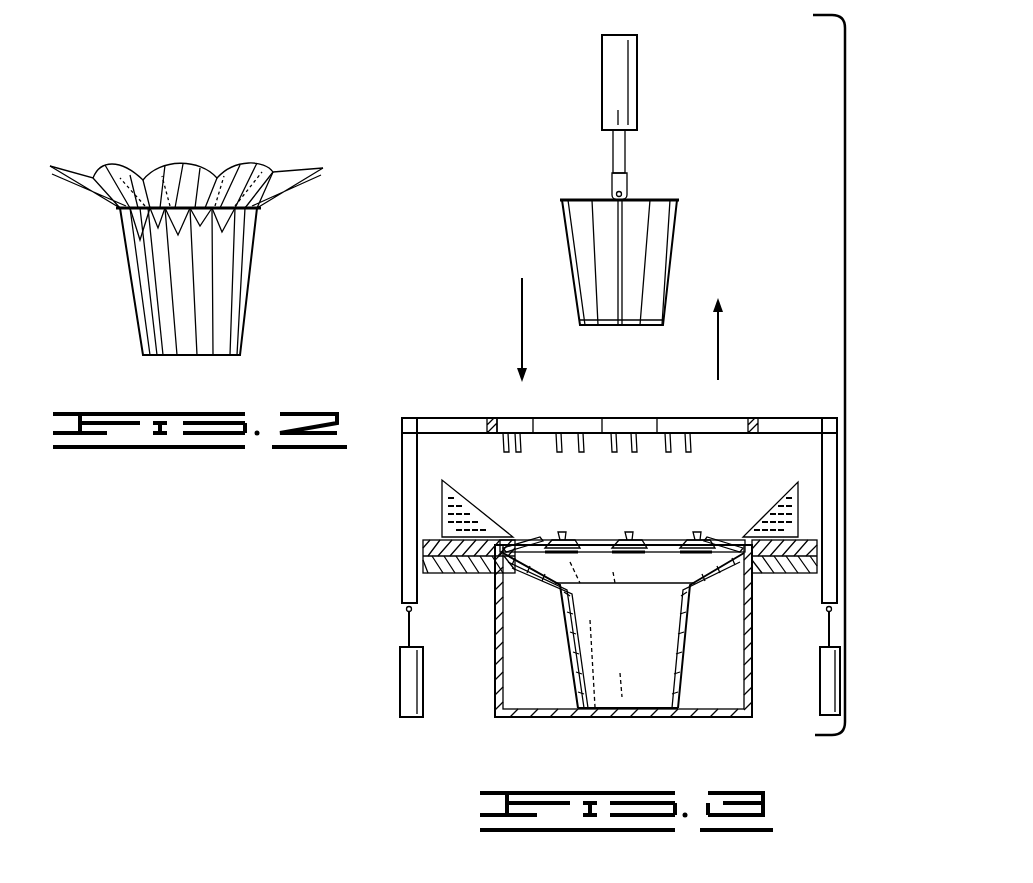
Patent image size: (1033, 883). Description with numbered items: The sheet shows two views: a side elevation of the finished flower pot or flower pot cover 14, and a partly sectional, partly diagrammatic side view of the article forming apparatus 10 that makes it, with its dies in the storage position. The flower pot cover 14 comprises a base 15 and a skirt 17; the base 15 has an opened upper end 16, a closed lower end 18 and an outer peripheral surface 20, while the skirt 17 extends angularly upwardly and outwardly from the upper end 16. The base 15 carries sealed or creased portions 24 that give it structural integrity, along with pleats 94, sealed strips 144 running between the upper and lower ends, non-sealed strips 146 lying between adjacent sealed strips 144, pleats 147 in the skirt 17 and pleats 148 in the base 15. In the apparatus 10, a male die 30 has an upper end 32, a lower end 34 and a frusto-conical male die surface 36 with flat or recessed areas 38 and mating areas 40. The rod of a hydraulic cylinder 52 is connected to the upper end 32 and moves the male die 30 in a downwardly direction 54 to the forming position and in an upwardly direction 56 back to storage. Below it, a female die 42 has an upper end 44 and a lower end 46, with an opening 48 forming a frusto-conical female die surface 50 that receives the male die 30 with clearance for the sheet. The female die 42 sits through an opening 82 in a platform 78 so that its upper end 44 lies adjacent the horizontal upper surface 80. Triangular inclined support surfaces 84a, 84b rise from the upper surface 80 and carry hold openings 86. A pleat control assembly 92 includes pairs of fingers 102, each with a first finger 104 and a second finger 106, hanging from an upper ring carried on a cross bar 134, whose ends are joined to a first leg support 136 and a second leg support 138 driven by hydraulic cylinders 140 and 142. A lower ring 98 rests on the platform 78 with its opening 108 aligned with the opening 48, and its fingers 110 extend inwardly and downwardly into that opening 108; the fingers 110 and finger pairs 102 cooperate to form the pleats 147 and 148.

In FIG. 3, the article forming apparatus 10 is at (497, 296).
In FIG. 2, the flower pot or flower pot cover 14 is at (284, 203).
In FIG. 2, the base 15 is at (245, 312).
In FIG. 2, the upper end 16 is at (120, 208).
In FIG. 2, the skirt 17 is at (273, 172).
In FIG. 2, the lower end 18 is at (225, 357).
In FIG. 2, the outer peripheral surface 20 is at (138, 294).
In FIG. 2, the sealed or creased portions 24 is at (225, 245).
In FIG. 3, the male die 30 is at (677, 238).
In FIG. 3, the upper end of male die 32 is at (655, 200).
In FIG. 3, the lower end of male die 34 is at (632, 326).
In FIG. 3, the male die surface 36 is at (676, 262).
In FIG. 3, the flat or recessed area 38 is at (580, 225).
In FIG. 3, the mating areas 40 is at (592, 247).
In FIG. 3, the female die 42 is at (688, 628).
In FIG. 3, the upper end of female die 44 is at (740, 562).
In FIG. 3, the lower end of female die 46 is at (628, 715).
In FIG. 3, the opening 48 is at (638, 540).
In FIG. 3, the female die surface 50 is at (572, 625).
In FIG. 3, the hydraulic cylinder 52 is at (623, 72).
In FIG. 3, the downwardly direction 54 is at (522, 330).
In FIG. 3, the upwardly direction 56 is at (718, 340).
In FIG. 3, the platform 78 is at (762, 480).
In FIG. 3, the upper surface 80 is at (428, 547).
In FIG. 3, the opening 82 is at (505, 565).
In FIG. 3, the inclined support surface 84a is at (442, 487).
In FIG. 3, the inclined support surface 84b is at (760, 515).
In FIG. 3, the hold openings 86 is at (457, 512).
In FIG. 3, the pleat control assembly 92 is at (470, 417).
In FIG. 2, the pleats 94 is at (243, 160).
In FIG. 3, the lower ring 98 is at (712, 418).
In FIG. 3, the pairs of fingers 102 is at (573, 448).
In FIG. 3, the first finger 104 is at (597, 420).
In FIG. 3, the second finger 106 is at (645, 440).
In FIG. 3, the opening 108 is at (585, 546).
In FIG. 3, the fingers 110 is at (632, 603).
In FIG. 3, the cross bar 134 is at (428, 418).
In FIG. 3, the first leg support 136 is at (402, 460).
In FIG. 3, the second leg support 138 is at (832, 493).
In FIG. 3, the hydraulic cylinder 140 is at (407, 680).
In FIG. 3, the hydraulic cylinder 142 is at (820, 684).
In FIG. 2, the sealed strips 144 is at (177, 327).
In FIG. 2, the non-sealed strip 146 is at (188, 323).
In FIG. 2, the pleats in skirt 147 is at (208, 160).
In FIG. 2, the pleats in base 148 is at (175, 287).